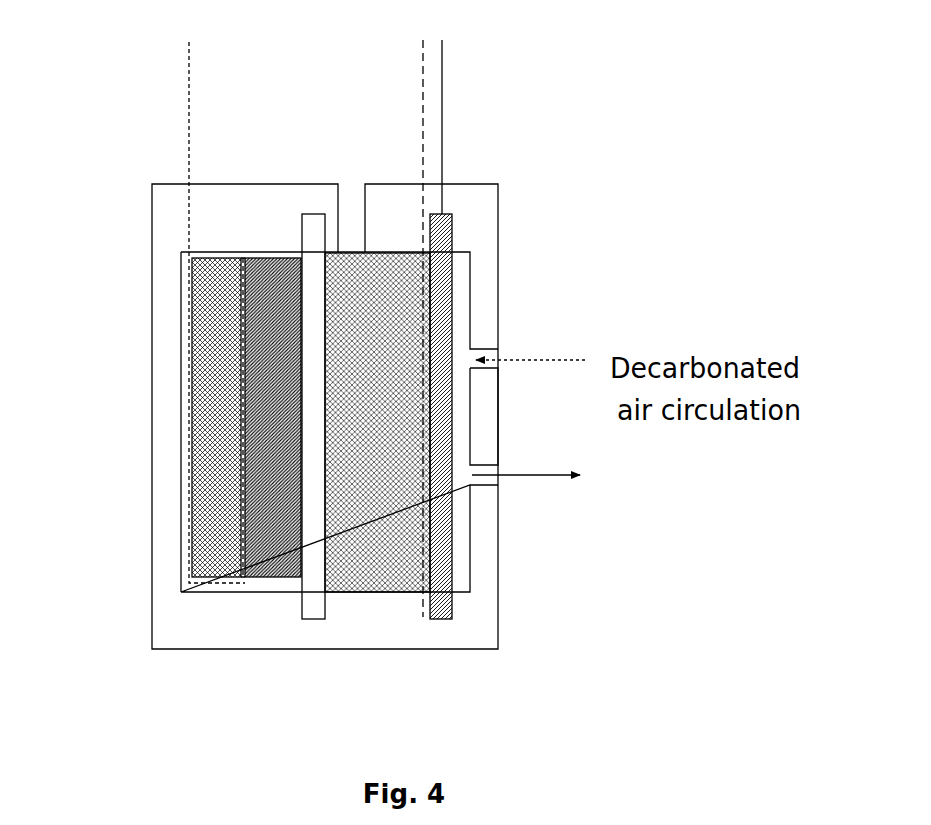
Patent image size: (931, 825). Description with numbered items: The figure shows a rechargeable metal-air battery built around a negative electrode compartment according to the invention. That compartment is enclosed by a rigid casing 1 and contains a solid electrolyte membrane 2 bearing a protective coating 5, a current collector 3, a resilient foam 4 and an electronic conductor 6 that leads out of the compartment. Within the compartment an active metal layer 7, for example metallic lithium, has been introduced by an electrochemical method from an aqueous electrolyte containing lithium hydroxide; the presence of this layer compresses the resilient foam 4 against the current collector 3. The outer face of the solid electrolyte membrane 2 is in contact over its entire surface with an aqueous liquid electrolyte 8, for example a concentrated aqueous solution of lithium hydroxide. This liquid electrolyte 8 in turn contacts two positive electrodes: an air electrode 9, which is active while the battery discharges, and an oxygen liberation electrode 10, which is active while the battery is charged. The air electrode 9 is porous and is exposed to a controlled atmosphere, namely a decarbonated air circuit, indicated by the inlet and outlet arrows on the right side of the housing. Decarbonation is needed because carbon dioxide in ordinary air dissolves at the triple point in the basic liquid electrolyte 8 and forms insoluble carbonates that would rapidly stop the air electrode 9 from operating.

The rigid casing 1 is at (160, 214).
The solid electrolyte membrane 2 is at (318, 282).
The current collector 3 is at (253, 458).
The resilient foam 4 is at (212, 427).
The protective coating 5 is at (308, 350).
The electronic conductor 6 is at (188, 110).
The active metal layer 7 is at (272, 475).
The aqueous liquid electrolyte 8 is at (385, 495).
The air electrode 9 is at (442, 300).
The oxygen liberation electrode 10 is at (423, 127).